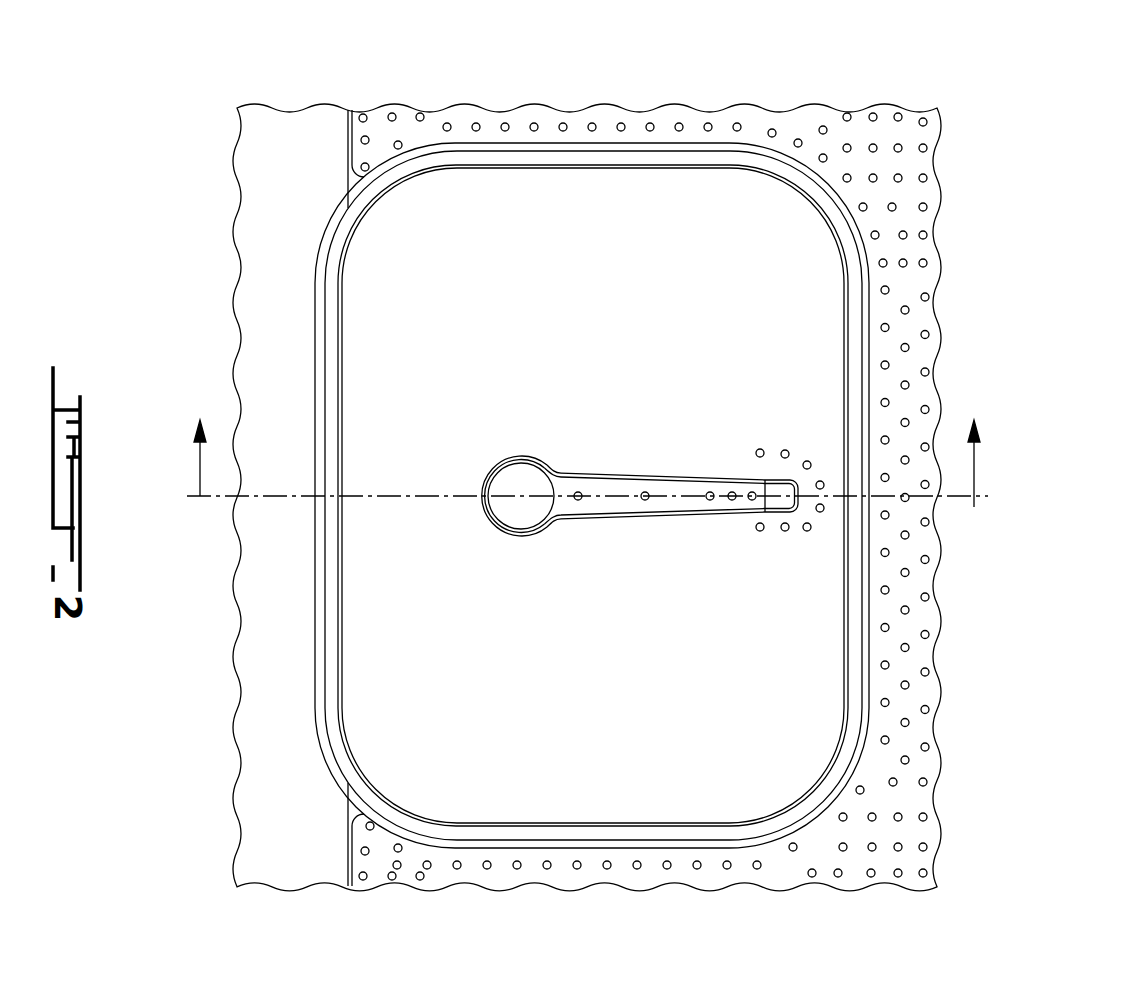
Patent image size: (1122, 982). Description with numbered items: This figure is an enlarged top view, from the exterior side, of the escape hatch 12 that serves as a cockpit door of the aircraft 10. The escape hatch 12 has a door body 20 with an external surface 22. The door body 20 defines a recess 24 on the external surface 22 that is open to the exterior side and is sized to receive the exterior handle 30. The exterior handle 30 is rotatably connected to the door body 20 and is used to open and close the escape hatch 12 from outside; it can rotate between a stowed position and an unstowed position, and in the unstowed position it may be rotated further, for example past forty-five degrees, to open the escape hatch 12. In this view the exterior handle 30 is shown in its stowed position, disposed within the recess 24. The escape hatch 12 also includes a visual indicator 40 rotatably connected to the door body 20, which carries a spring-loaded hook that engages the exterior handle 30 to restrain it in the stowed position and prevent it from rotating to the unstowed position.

The aircraft 10 is at (980, 128).
The escape hatch 12 is at (902, 787).
The door body 20 is at (427, 148).
The external surface 22 is at (733, 195).
The recess 24 is at (655, 515).
The exterior handle 30 is at (523, 512).
The visual indicator 40 is at (782, 487).